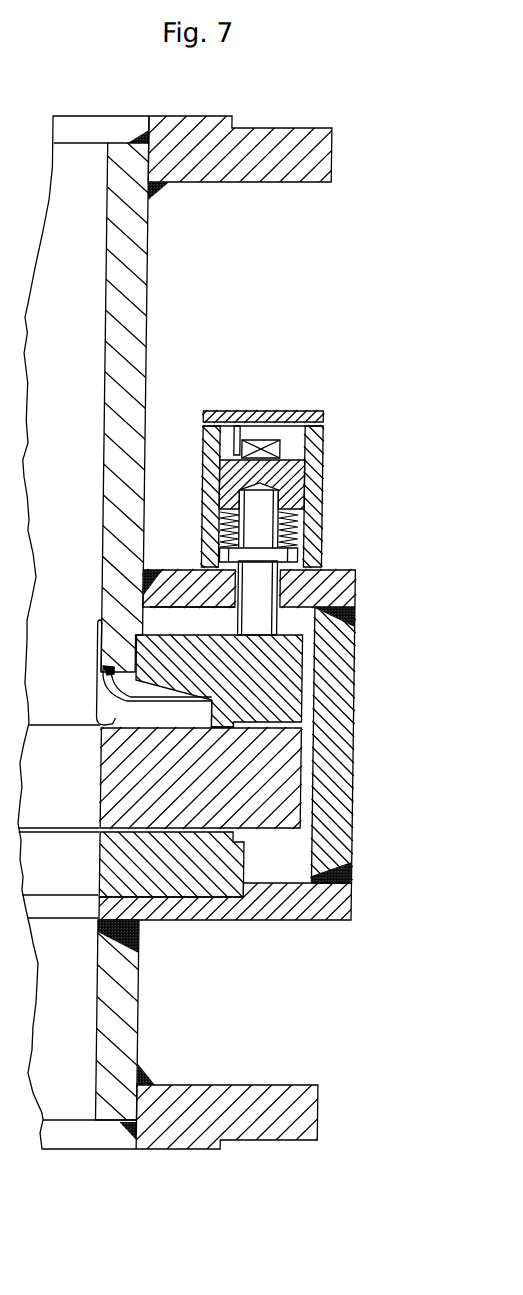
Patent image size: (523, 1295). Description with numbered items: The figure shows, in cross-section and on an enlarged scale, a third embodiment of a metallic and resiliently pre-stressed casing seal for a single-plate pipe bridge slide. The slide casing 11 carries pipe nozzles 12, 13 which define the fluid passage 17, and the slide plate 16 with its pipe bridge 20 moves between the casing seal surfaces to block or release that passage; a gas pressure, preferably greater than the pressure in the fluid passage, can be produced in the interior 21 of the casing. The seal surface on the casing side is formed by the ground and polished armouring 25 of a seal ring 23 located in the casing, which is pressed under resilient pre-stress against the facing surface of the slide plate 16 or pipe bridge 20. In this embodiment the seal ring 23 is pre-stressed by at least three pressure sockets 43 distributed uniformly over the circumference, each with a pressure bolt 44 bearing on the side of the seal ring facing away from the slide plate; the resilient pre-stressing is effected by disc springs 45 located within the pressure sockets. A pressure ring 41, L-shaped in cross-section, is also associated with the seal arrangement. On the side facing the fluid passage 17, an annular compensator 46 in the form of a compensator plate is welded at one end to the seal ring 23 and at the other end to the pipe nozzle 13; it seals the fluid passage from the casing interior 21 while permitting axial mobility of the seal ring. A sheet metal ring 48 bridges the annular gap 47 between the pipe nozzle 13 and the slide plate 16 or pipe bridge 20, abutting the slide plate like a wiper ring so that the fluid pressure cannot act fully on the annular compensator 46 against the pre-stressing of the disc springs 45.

The slide casing 11 is at (343, 585).
The pipe nozzle 12 is at (131, 1033).
The pipe nozzle 13 is at (131, 292).
The slide plate 16 is at (285, 791).
The fluid passage 17 is at (54, 788).
The pipe bridge 20 is at (251, 764).
The interior of the casing 21 is at (185, 615).
The seal ring 23 is at (265, 718).
The armouring 25 is at (224, 728).
The pressure ring 41 is at (198, 887).
The pressure socket 43 is at (297, 479).
The pressure bolt 44 is at (263, 605).
The disc springs 45 is at (296, 518).
The annular compensator 46 is at (118, 684).
The annular gap 47 is at (118, 707).
The sheet metal ring 48 is at (98, 655).